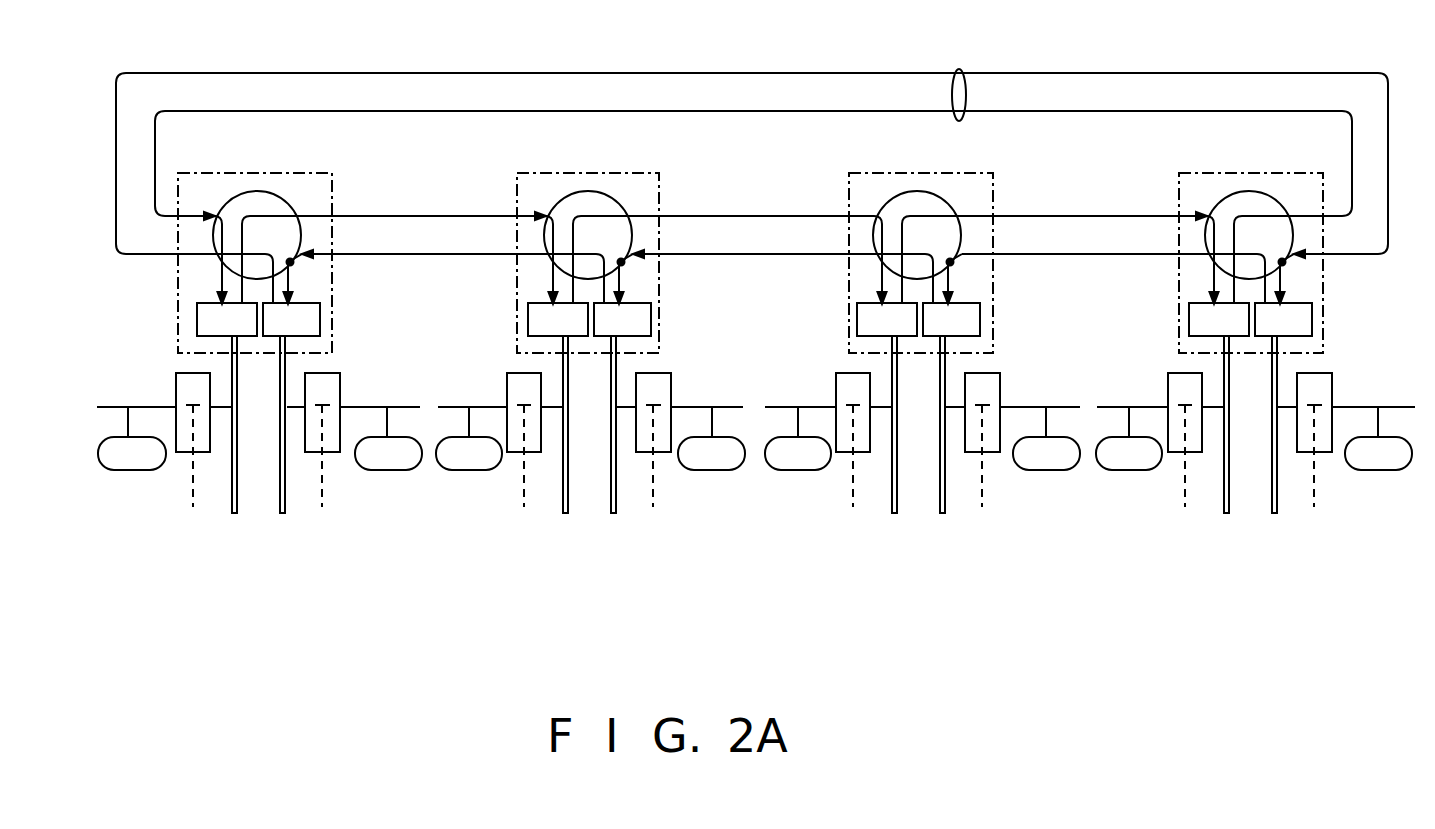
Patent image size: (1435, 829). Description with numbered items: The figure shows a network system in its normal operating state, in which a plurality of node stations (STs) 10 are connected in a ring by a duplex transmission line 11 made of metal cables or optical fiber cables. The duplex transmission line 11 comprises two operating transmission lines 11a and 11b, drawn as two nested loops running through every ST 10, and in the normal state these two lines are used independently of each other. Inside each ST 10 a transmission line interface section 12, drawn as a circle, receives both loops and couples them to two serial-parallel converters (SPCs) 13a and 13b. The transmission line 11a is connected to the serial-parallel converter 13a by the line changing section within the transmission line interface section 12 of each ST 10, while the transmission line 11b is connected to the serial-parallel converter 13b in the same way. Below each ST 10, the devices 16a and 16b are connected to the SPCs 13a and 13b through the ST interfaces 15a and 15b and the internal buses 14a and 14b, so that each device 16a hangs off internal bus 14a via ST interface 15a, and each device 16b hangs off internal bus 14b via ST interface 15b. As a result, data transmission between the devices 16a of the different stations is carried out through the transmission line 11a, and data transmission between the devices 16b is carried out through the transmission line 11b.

The node station 10 is at (318, 152).
The duplex transmission line 11 is at (968, 73).
The transmission line 11a is at (705, 73).
The transmission line 11b is at (670, 111).
The transmission line interface section 12 is at (292, 213).
The serial-parallel converter 13a is at (320, 322).
The serial-parallel converter 13b is at (197, 322).
The internal bus 14a is at (286, 497).
The internal bus 14b is at (232, 497).
The ST interface 15a is at (340, 382).
The ST interface 15b is at (176, 380).
The device 16a is at (388, 470).
The device 16b is at (143, 470).